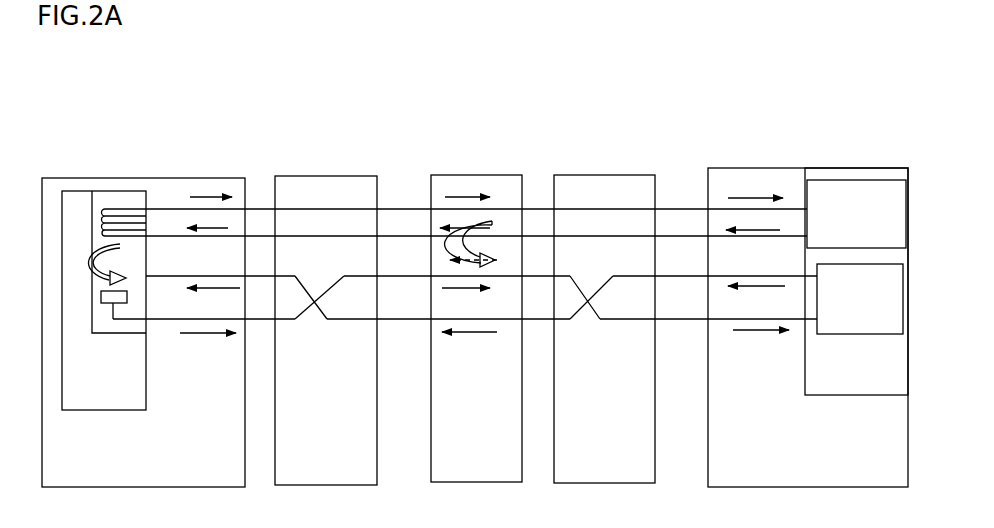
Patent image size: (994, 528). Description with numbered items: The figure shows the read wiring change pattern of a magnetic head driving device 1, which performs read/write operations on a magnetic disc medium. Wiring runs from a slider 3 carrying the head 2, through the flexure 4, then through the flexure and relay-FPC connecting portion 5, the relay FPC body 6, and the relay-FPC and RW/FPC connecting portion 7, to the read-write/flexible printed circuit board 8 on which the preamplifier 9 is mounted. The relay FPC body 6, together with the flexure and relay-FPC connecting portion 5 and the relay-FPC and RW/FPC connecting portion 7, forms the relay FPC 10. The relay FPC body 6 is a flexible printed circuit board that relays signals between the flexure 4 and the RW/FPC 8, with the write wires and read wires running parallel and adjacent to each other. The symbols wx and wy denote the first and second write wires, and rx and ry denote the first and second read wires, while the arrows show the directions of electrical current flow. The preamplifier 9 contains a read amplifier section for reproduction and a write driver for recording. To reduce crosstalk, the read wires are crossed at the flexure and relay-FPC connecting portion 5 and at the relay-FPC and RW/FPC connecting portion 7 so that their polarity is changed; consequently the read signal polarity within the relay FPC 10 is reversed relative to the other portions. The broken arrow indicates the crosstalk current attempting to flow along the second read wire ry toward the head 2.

The magnetic head driving device 1 is at (808, 292).
The head 2 is at (90, 300).
The slider 3 is at (146, 371).
The flexure 4 is at (198, 177).
The flexure and relay-FPC connecting portion 5 is at (339, 176).
The relay FPC body 6 is at (457, 175).
The relay-FPC and RW/FPC connecting portion 7 is at (590, 175).
The read-write/flexible printed circuit board 8 is at (742, 168).
The preamplifier 9 is at (800, 363).
The relay FPC 10 is at (597, 126).